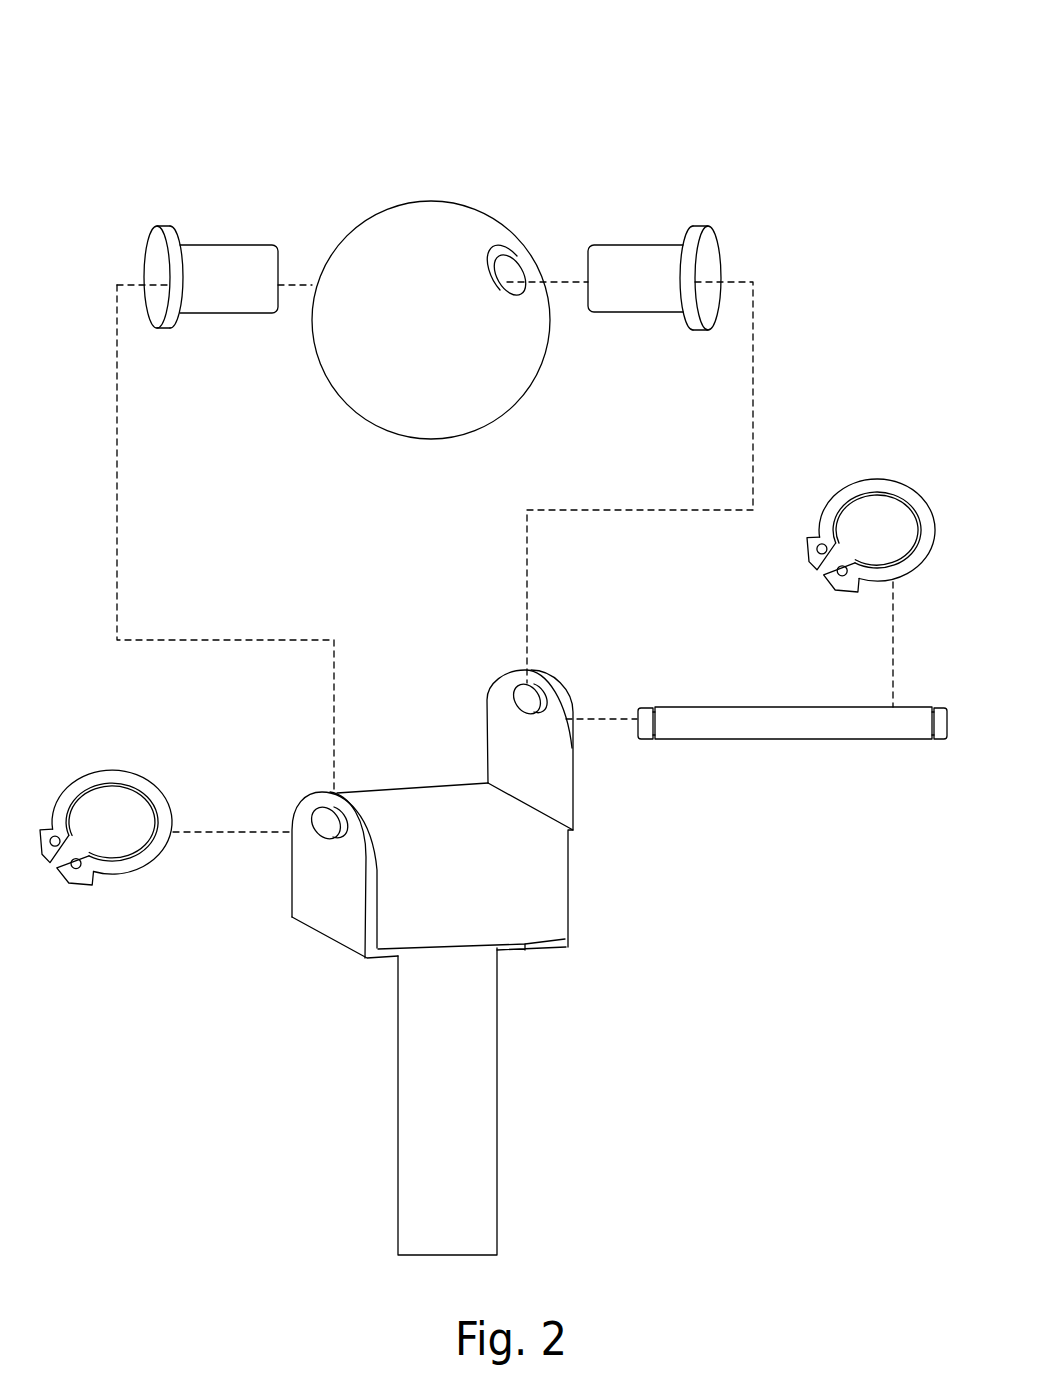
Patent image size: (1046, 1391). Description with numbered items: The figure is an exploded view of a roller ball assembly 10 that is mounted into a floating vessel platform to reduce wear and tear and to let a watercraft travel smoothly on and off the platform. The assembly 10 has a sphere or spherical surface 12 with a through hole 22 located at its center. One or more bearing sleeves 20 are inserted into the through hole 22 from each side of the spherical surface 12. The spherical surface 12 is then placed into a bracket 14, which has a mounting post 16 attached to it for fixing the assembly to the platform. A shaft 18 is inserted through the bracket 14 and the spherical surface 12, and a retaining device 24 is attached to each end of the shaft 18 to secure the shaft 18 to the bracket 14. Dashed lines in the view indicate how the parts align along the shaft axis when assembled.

The roller ball assembly 10 is at (274, 136).
The spherical surface 12 is at (425, 230).
The bracket 14 is at (558, 895).
The mounting post 16 is at (414, 1107).
The shaft 18 is at (760, 707).
The bearing sleeves 20 is at (245, 262).
The through hole 22 is at (500, 283).
The retaining device 24 is at (863, 478).